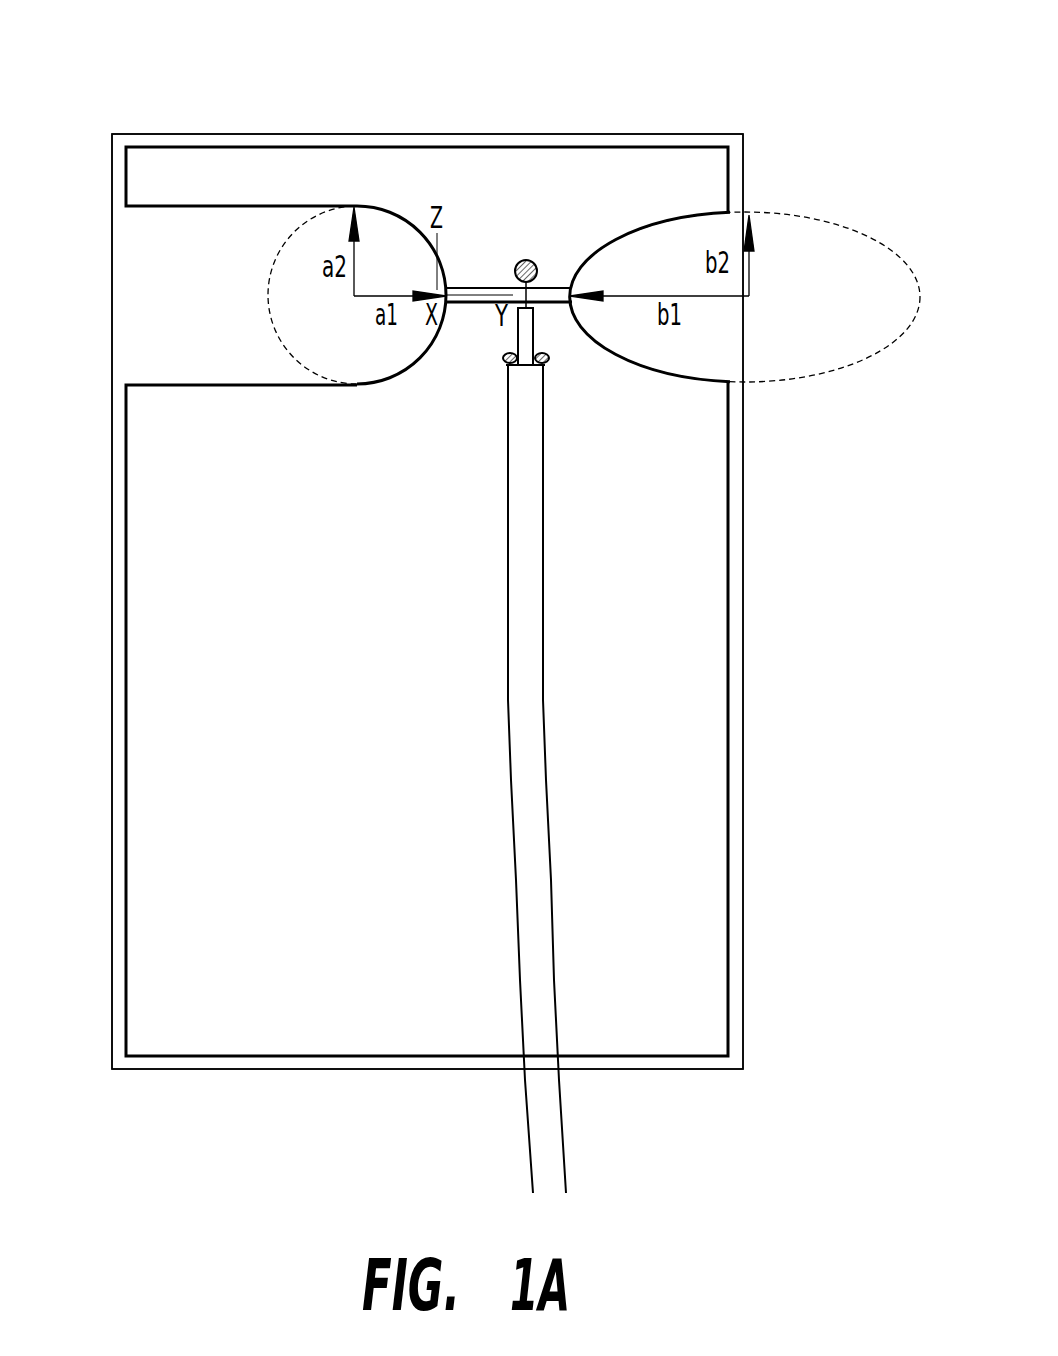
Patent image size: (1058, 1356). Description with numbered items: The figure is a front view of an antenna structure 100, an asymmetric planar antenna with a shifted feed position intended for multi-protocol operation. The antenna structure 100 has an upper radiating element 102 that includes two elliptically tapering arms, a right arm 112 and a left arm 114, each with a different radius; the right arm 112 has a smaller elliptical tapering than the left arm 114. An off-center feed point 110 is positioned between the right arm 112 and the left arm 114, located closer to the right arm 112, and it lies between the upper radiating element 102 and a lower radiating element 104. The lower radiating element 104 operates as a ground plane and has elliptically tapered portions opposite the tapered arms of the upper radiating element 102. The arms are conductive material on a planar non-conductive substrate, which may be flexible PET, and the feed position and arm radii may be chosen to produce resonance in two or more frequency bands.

The antenna structure 100 is at (813, 62).
The upper radiating element 102 is at (618, 158).
The lower radiating element 104 is at (717, 793).
The feed point 110 is at (527, 259).
The right arm 112 is at (720, 180).
The left arm 114 is at (132, 177).